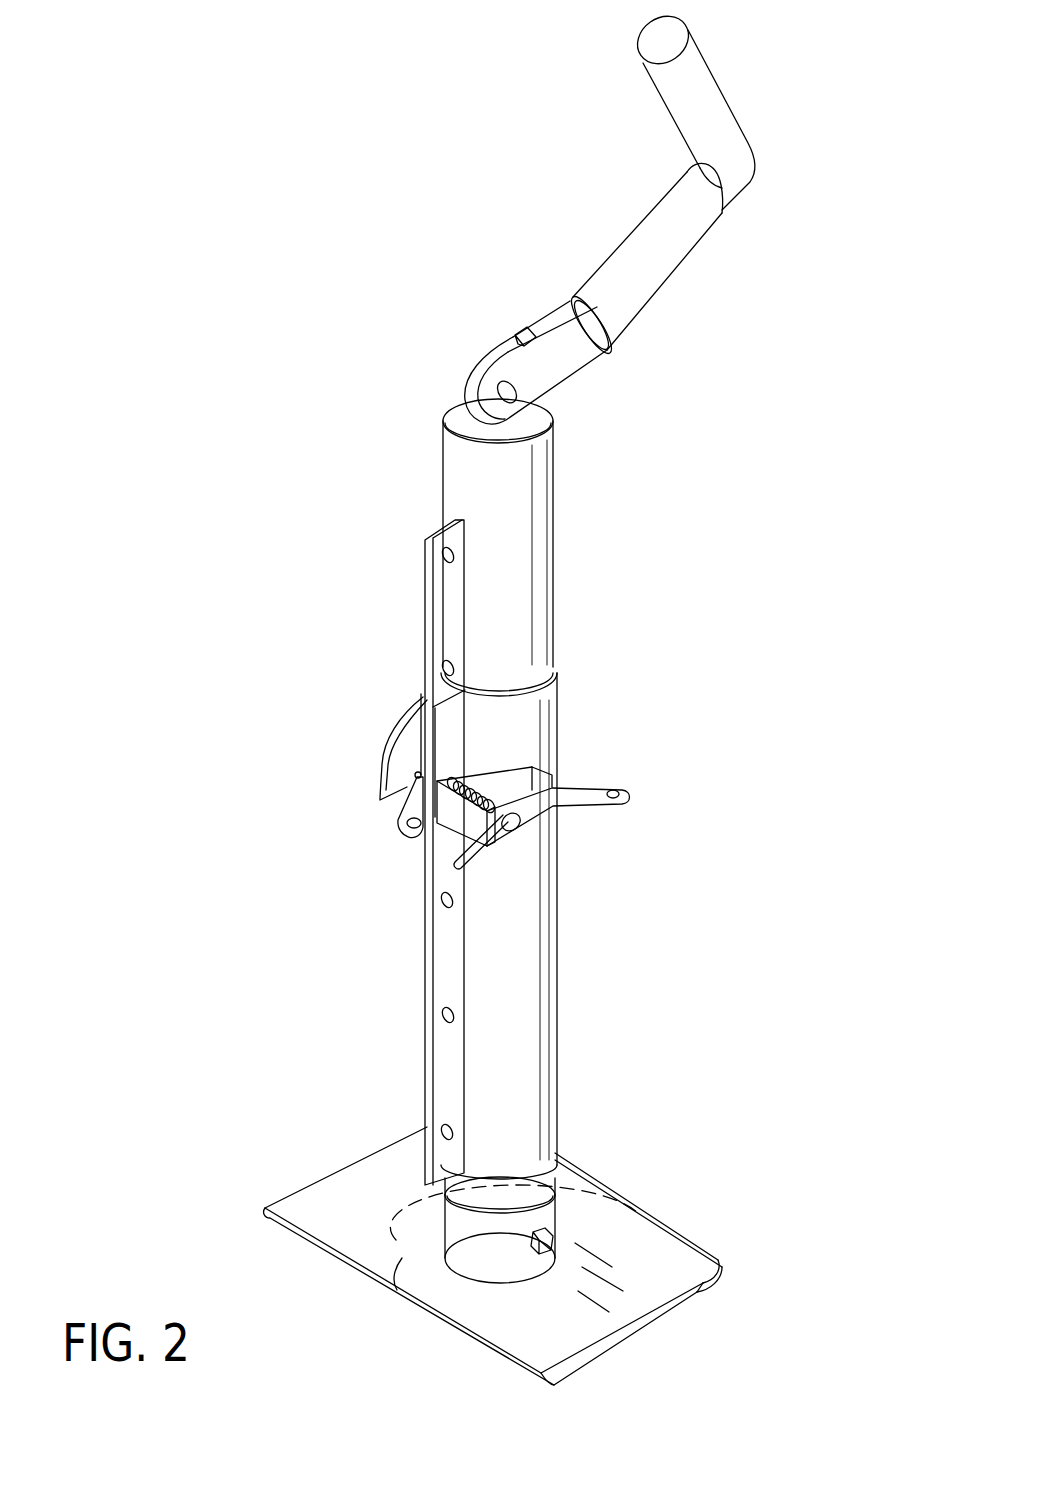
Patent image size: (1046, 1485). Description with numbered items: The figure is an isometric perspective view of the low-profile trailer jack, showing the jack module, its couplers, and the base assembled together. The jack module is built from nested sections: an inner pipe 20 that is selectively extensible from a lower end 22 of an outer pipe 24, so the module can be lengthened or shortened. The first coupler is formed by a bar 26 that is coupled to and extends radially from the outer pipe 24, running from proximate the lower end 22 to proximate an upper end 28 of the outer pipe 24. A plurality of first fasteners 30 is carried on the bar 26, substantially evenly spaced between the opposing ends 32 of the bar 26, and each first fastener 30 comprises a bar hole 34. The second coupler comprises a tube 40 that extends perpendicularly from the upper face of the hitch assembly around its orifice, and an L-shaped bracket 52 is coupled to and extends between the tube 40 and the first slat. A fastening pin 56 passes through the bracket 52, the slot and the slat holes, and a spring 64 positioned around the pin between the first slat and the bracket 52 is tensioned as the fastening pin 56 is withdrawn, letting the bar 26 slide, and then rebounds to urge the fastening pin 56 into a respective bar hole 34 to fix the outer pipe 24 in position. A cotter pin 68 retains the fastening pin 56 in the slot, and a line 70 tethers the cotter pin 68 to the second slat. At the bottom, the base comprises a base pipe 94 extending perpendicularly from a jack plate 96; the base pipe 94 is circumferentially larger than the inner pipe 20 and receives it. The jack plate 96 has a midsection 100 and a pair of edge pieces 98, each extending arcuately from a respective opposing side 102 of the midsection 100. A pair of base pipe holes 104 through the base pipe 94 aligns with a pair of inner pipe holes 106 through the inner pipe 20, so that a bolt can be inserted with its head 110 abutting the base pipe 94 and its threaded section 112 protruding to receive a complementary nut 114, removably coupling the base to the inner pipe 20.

The inner pipe 20 is at (547, 1162).
The lower end 22 is at (523, 1177).
The outer pipe 24 is at (532, 535).
The bar 26 is at (427, 877).
The upper end 28 is at (517, 442).
The first fasteners 30 is at (443, 1017).
The opposing ends 32 is at (433, 1187).
The bar hole 34 is at (478, 993).
The tube 40 is at (528, 710).
The bracket 52 is at (533, 808).
The fastening pin 56 is at (515, 833).
The spring 64 is at (485, 786).
The cotter pin 68 is at (372, 808).
The line 70 is at (405, 723).
The base pipe 94 is at (483, 1250).
The jack plate 96 is at (632, 1268).
The edge pieces 98 is at (556, 1384).
The midsection 100 is at (513, 1305).
The opposing side 102 is at (556, 1375).
The base pipe holes 104 is at (635, 1197).
The inner pipe holes 106 is at (393, 1293).
The head 110 is at (553, 1240).
The threaded section 112 is at (410, 1210).
The nut 114 is at (417, 1220).